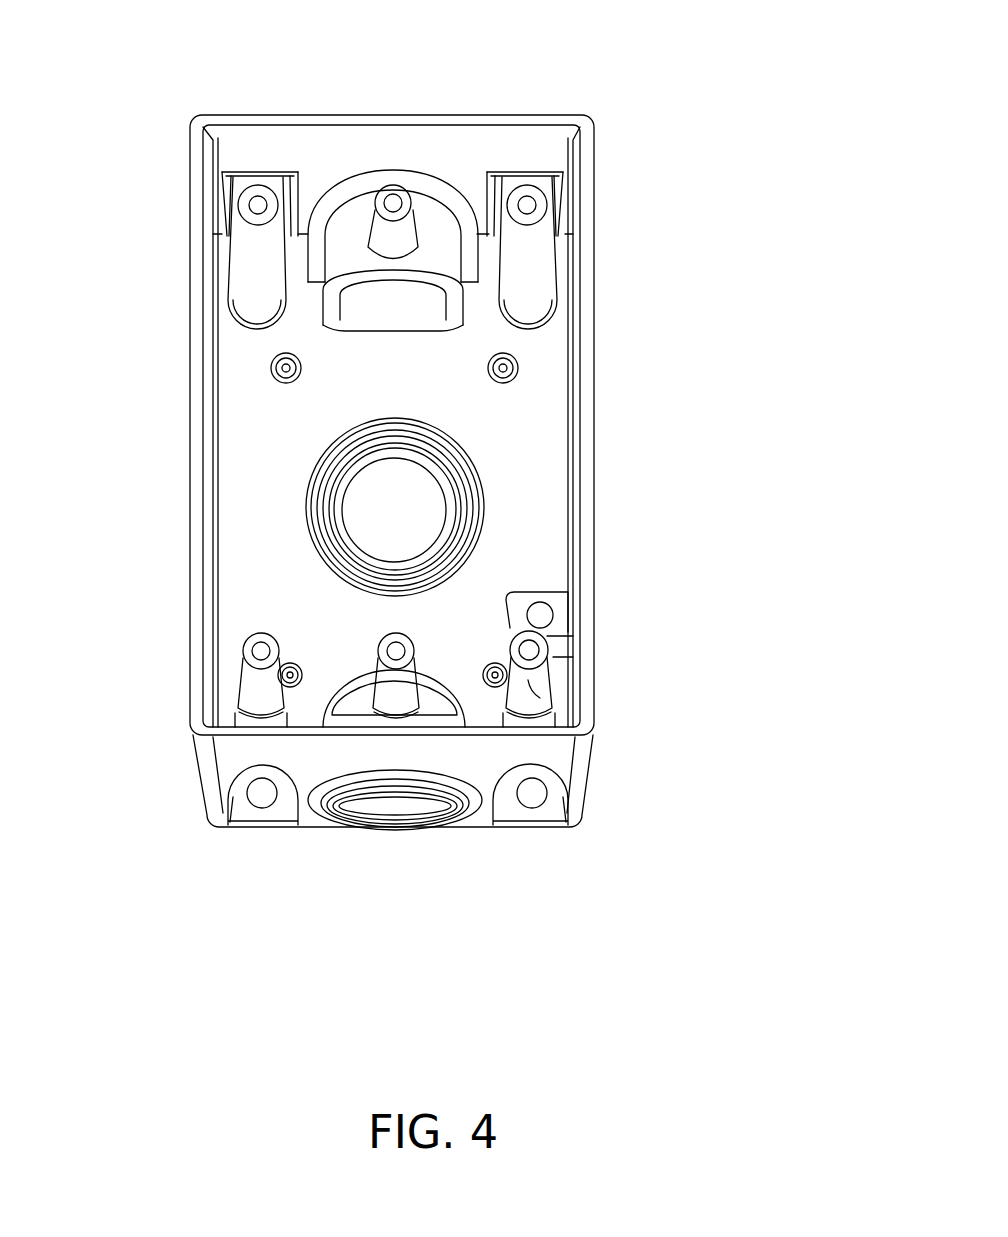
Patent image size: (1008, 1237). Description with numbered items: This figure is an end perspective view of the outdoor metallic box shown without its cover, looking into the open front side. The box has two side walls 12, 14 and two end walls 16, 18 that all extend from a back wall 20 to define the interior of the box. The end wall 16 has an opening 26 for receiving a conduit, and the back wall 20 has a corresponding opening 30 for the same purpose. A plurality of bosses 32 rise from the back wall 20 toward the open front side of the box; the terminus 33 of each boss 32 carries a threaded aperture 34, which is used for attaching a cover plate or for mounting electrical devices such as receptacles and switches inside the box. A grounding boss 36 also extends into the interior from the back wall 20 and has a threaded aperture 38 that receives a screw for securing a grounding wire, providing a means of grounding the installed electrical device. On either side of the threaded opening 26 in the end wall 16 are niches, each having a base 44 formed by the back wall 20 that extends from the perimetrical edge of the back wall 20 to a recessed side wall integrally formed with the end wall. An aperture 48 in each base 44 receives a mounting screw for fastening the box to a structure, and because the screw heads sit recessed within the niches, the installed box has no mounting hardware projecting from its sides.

The side wall 12 is at (598, 372).
The side wall 14 is at (190, 447).
The end wall 16 is at (558, 768).
The end wall 18 is at (538, 142).
The back wall 20 is at (531, 393).
The opening 26 is at (422, 808).
The opening 30 is at (410, 511).
The boss 32 is at (548, 697).
The terminus 33 is at (540, 668).
The threaded aperture 34 is at (540, 650).
The grounding boss 36 is at (650, 620).
The threaded aperture 38 is at (540, 603).
The base 44 is at (241, 806).
The aperture 48 is at (267, 806).